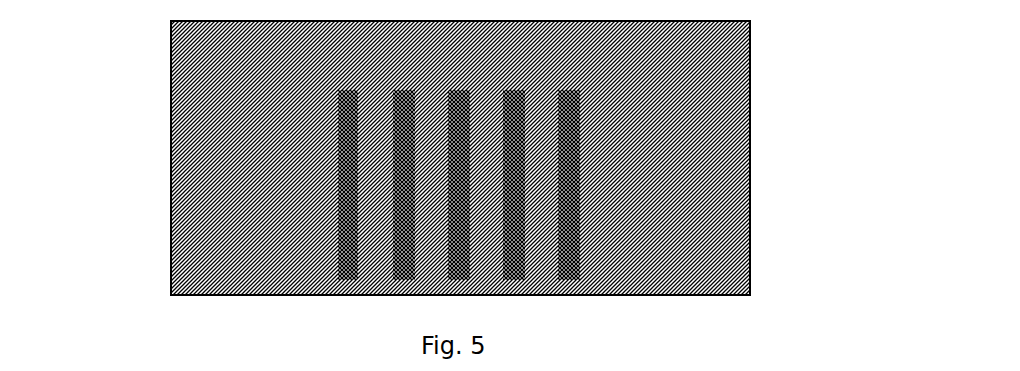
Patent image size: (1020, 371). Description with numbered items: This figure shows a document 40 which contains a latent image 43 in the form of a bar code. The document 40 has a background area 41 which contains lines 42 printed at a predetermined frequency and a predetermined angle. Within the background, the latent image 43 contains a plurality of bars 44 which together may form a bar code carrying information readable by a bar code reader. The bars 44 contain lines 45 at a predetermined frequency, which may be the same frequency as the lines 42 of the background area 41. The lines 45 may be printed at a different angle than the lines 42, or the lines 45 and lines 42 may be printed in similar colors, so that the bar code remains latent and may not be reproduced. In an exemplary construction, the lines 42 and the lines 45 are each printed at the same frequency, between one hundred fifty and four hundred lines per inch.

The document 40 is at (170, 62).
The background area 41 is at (207, 98).
The lines 42 is at (207, 153).
The latent image 43 is at (340, 202).
The bars 44 is at (340, 258).
The lines 45 is at (340, 266).